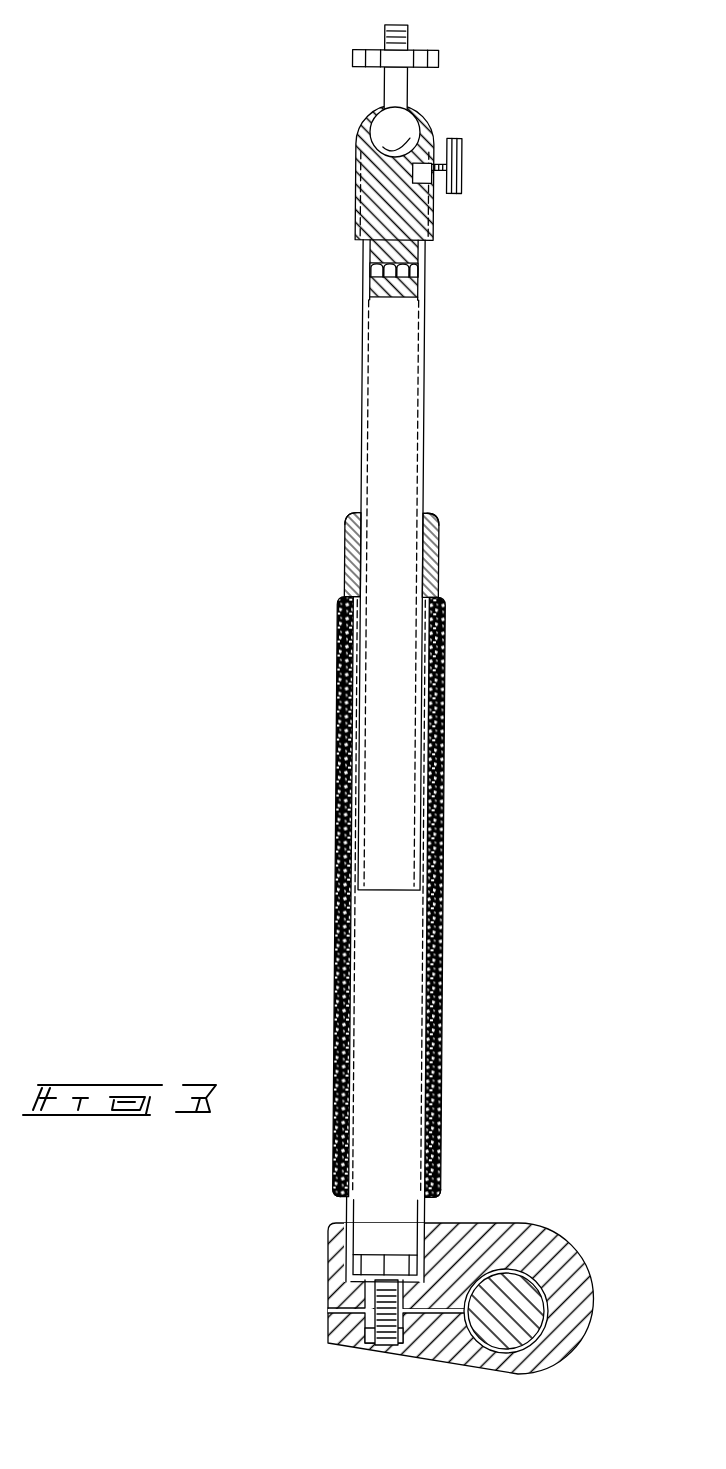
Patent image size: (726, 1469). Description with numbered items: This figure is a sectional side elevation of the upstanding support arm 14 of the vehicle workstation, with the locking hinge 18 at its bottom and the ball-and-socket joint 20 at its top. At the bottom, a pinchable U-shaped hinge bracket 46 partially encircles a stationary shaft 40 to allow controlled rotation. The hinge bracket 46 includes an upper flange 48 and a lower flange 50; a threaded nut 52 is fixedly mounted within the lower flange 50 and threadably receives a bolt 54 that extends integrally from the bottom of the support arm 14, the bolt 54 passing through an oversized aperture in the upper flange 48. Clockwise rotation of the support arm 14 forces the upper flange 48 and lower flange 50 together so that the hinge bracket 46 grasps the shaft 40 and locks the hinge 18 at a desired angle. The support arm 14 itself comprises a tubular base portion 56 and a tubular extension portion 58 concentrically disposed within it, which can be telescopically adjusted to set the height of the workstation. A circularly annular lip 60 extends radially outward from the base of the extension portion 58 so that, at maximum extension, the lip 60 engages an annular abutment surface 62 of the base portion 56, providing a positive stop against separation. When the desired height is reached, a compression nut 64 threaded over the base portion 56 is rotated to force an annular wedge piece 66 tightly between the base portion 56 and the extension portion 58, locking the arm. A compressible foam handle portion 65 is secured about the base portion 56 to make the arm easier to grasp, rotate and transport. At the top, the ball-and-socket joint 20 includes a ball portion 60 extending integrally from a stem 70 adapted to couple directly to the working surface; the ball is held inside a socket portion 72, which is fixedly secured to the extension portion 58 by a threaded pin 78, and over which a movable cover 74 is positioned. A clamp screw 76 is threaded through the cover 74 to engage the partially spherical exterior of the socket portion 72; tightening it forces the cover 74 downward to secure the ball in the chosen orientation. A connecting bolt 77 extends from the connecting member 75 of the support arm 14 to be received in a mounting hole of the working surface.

The upstanding support arm 14 is at (458, 771).
The locking hinge 18 is at (565, 1239).
The ball-and-socket joint 20 is at (435, 110).
The stationary shaft 40 is at (528, 1330).
The hinge bracket 46 is at (577, 1275).
The upper flange 48 is at (328, 1290).
The lower flange 50 is at (340, 1342).
The threaded nut 52 is at (360, 1350).
The bolt 54 is at (375, 1345).
The tubular base portion 56 is at (340, 1212).
The tubular extension portion 58 is at (424, 418).
The annular lip 60 is at (380, 125).
The annular abutment surface 62 is at (446, 625).
The compression nut 64 is at (344, 550).
The compressible foam handle portion 65 is at (336, 873).
The annular wedge piece 66 is at (348, 523).
The stem 70 is at (393, 93).
The socket portion 72 is at (385, 170).
The movable cover 74 is at (430, 215).
The connecting member 75 is at (430, 50).
The clamp screw 76 is at (462, 172).
The connecting bolt 77 is at (385, 28).
The threaded pin 78 is at (418, 265).